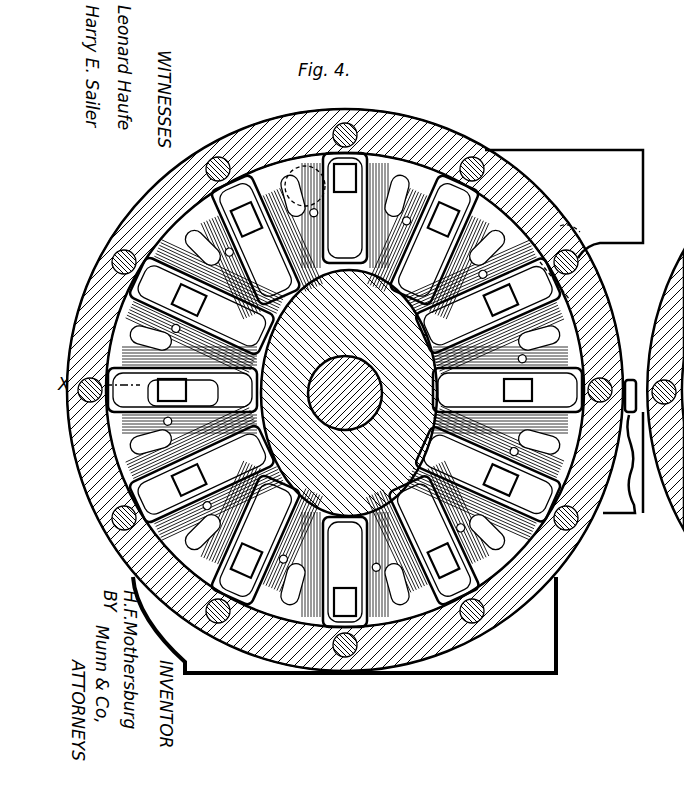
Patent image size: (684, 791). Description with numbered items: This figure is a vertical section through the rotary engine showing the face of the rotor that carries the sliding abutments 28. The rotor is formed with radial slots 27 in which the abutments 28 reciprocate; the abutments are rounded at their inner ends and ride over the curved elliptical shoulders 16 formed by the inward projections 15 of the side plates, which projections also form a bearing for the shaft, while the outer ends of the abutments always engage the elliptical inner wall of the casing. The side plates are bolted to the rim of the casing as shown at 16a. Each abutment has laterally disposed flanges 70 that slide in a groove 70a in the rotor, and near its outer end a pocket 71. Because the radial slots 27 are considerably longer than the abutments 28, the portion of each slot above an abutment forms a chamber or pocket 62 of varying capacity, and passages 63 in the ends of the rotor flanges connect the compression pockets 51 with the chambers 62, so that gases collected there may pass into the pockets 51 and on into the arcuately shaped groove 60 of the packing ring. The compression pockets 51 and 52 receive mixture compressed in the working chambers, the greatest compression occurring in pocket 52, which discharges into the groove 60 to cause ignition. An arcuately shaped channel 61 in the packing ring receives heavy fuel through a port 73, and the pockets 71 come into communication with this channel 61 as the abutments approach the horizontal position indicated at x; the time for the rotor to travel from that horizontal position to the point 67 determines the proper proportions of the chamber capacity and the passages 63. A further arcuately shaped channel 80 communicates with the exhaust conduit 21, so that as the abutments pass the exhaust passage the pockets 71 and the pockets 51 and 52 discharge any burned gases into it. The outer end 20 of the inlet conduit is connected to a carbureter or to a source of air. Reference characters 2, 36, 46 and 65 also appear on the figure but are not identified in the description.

The wheel assembly 2 is at (258, 121).
The inward projections 15 is at (466, 418).
The curved elliptical shoulders 16 is at (460, 368).
The bolts 16a is at (356, 128).
The outer end of the conduit 20 is at (632, 512).
The exhaust conduit 21 is at (585, 150).
The radial slots 27 is at (478, 268).
The abutments 28 is at (345, 379).
The lug 36 is at (578, 343).
The latch 46 is at (632, 368).
The compression pockets 51 is at (292, 194).
The compression pockets 52 is at (232, 253).
The arcuately shaped groove 60 is at (204, 218).
The arcuately shaped channel 61 is at (201, 474).
The chamber or pocket 62 is at (232, 190).
The passages 63 is at (138, 226).
The inner rim edge 65 is at (492, 228).
The point 67 is at (312, 170).
The laterally disposed flanges 70 is at (470, 330).
The groove 70a is at (540, 436).
The pockets 71 is at (586, 562).
The port 73 is at (194, 392).
The arcuately shaped channel 80 is at (572, 230).